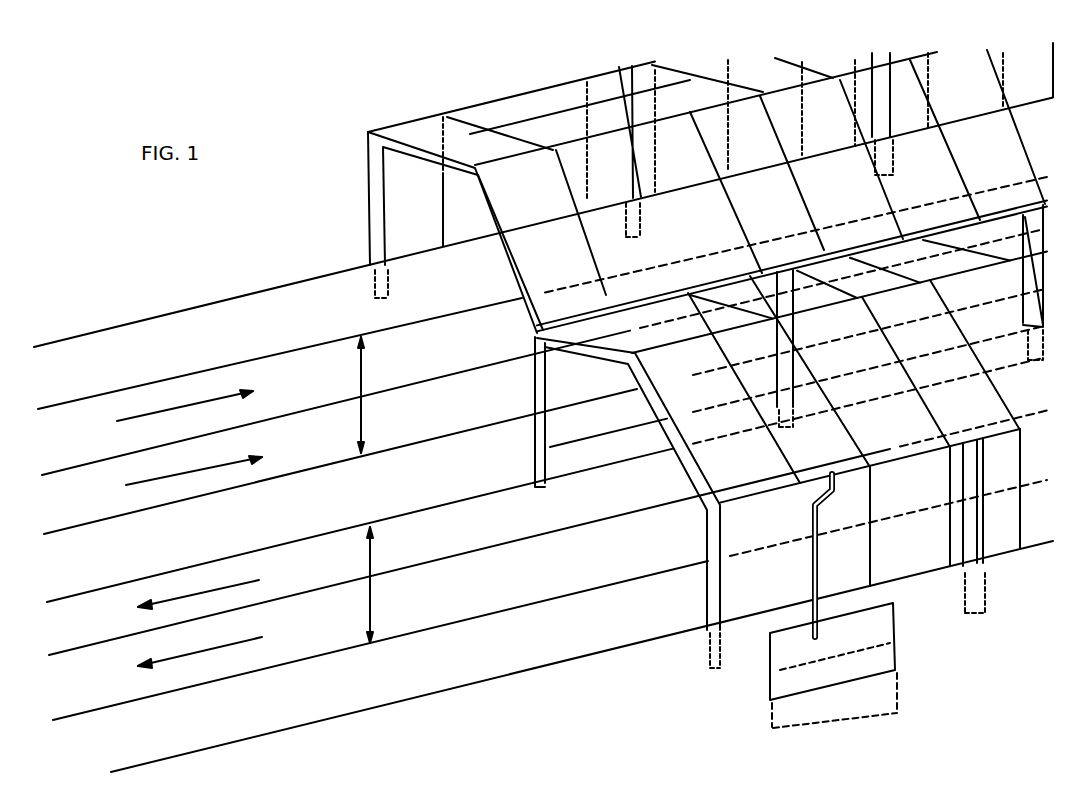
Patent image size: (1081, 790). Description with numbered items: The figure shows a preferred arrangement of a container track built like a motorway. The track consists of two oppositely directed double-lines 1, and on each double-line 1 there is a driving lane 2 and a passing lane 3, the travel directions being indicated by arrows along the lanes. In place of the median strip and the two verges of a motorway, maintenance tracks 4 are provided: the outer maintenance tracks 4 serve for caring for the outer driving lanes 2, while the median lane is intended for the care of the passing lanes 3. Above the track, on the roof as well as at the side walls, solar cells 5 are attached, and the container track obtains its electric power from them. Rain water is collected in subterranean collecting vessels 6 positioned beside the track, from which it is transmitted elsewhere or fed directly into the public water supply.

The double-line 1 is at (367, 490).
The driving lane 2 is at (185, 529).
The passing lane 3 is at (189, 532).
The maintenance track 4 is at (543, 407).
The solar cells 5 is at (707, 359).
The collecting vessel 6 is at (685, 390).